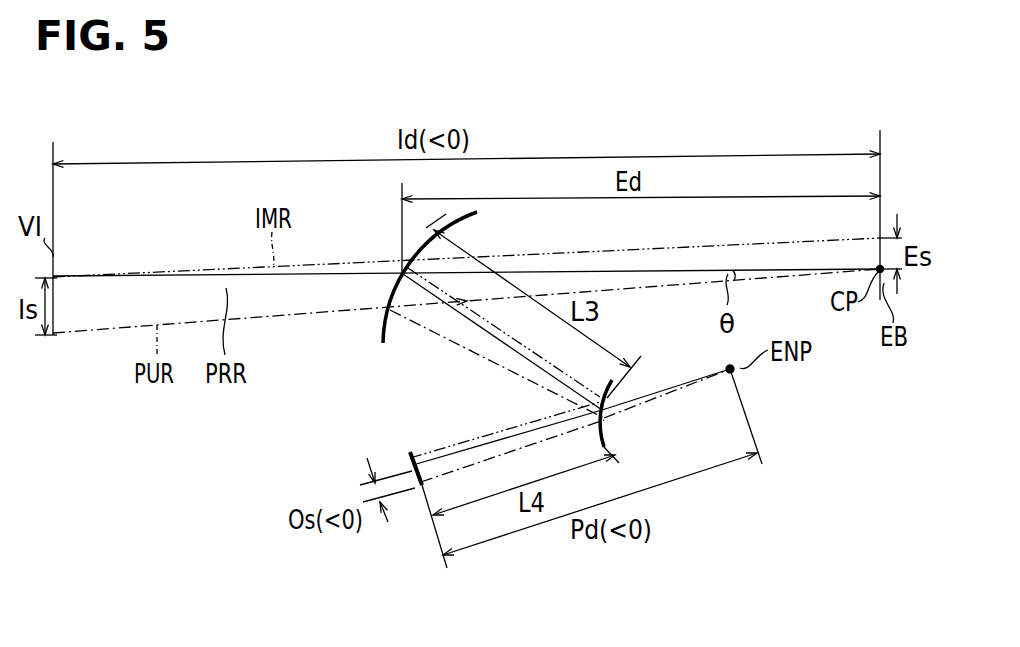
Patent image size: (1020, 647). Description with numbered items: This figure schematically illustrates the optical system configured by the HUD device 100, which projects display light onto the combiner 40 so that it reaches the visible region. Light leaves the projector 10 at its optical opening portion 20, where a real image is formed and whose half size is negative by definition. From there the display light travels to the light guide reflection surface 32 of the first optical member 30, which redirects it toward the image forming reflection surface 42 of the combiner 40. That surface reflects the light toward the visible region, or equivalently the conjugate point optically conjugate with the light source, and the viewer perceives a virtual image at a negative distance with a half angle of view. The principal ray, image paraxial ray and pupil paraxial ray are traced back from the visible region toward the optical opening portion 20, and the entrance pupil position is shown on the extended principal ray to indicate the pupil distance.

The projector 10 is at (384, 490).
The optical opening portion 20 is at (410, 452).
The first optical member 30 is at (638, 375).
The light guide reflection surface 32 is at (608, 384).
The combiner 40 is at (422, 303).
The image forming reflection surface 42 is at (395, 322).
The HUD device 100 is at (243, 497).